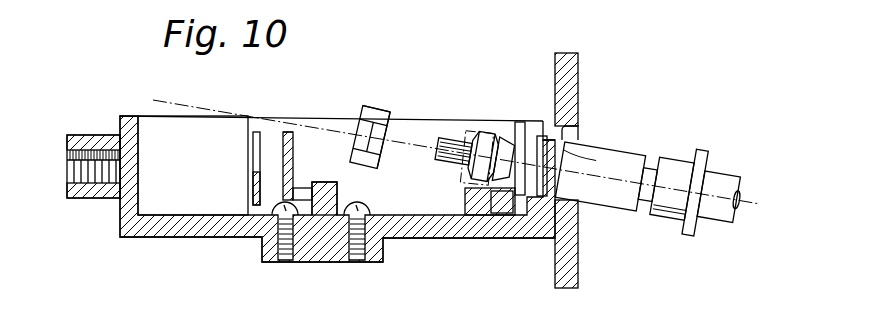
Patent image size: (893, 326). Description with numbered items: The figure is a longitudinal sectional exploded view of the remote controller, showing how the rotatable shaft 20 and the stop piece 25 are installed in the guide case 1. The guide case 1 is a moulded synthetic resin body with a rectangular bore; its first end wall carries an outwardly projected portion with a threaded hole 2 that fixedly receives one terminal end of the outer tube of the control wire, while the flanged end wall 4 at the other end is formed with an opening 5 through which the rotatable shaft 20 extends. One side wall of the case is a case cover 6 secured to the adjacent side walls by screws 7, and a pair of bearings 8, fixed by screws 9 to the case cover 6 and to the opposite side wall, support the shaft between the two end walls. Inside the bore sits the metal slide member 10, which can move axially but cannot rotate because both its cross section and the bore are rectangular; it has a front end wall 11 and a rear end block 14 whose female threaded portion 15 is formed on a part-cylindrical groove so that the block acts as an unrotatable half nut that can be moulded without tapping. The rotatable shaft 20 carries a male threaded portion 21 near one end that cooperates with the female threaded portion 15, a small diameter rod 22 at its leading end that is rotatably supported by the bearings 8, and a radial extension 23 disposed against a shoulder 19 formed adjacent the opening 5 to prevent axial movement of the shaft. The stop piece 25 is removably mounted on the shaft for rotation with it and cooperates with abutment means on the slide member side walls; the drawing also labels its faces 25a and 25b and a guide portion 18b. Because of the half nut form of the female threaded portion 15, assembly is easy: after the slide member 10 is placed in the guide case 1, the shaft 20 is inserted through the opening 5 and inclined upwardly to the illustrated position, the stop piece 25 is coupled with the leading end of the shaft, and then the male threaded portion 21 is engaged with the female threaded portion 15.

The guide case 1 is at (231, 89).
The threaded hole 2 is at (98, 172).
The flanged end wall 4 is at (583, 70).
The opening 5 is at (598, 155).
The case cover 6 is at (253, 190).
The screws 7 is at (253, 167).
The bearings 8 is at (339, 192).
The screws 9 is at (370, 210).
The slide member 10 is at (324, 83).
The front end wall 11 is at (296, 141).
The rear end block 14 is at (477, 216).
The female threaded portion 15 is at (501, 220).
The guide member 18b is at (300, 190).
The shoulder 19 is at (576, 130).
The rotatable shaft 20 is at (697, 168).
The male threaded portion 21 is at (521, 140).
The small diameter rod 22 is at (447, 165).
The radial extension 23 is at (688, 238).
The stop piece 25 is at (422, 111).
The roller end face 25a is at (368, 106).
The roller side face 25b is at (407, 130).